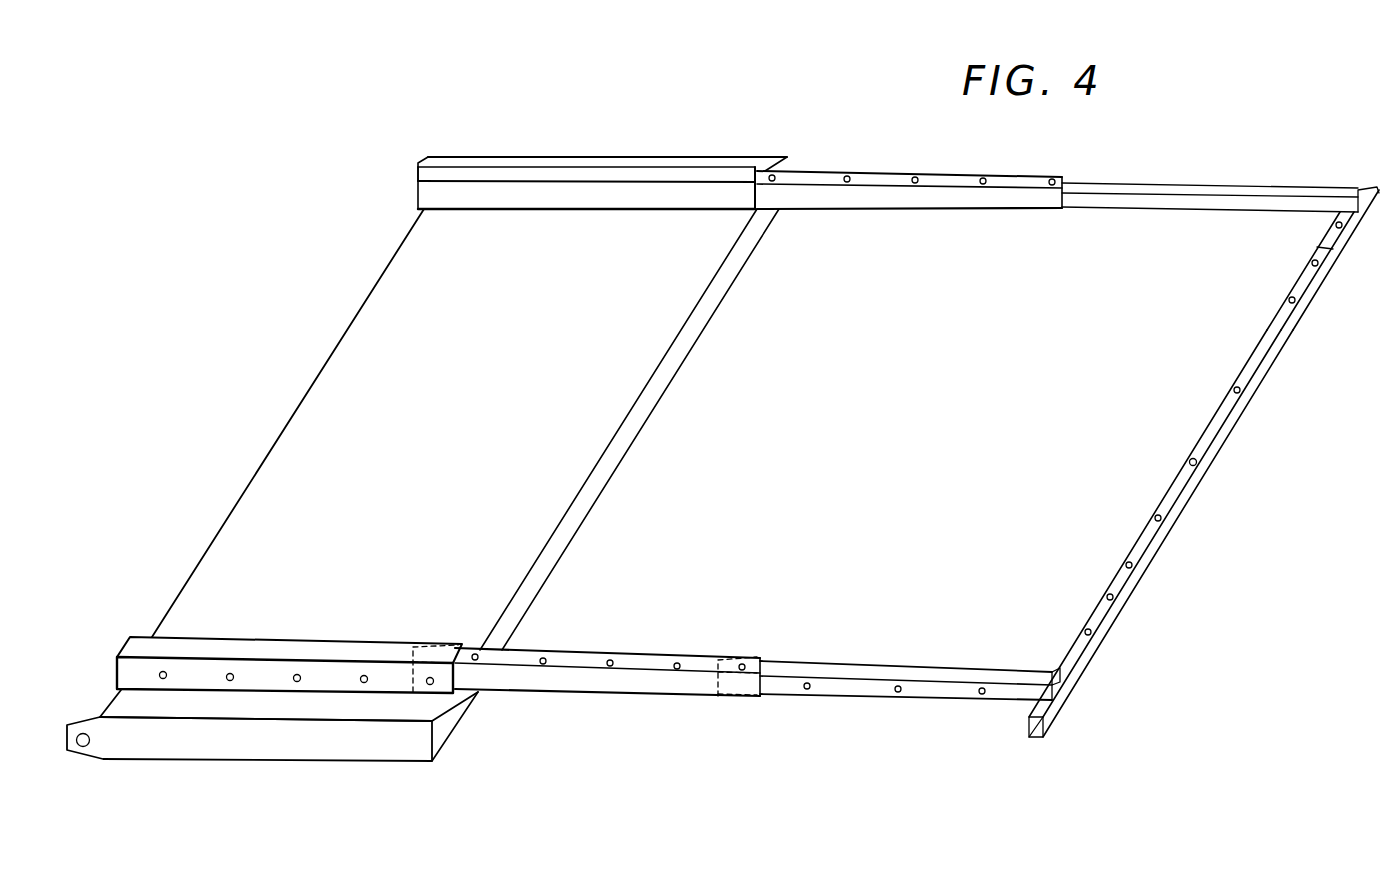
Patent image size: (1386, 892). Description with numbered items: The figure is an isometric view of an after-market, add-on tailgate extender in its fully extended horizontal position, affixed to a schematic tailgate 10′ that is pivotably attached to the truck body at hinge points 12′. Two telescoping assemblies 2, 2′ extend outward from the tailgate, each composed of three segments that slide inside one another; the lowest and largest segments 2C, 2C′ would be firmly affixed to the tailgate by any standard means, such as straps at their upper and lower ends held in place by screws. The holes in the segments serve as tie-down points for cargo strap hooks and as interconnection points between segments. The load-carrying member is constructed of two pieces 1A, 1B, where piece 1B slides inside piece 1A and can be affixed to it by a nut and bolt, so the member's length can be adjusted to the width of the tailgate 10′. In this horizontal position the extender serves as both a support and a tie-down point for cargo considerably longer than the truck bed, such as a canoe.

The telescoping assembly segment 2C′ is at (553, 217).
The telescoping assembly 2′ is at (905, 215).
The load-carrying member piece 1B is at (1326, 252).
The load-carrying member piece 1A is at (1190, 510).
The tailgate 10′ is at (645, 430).
The telescoping assembly segment 2C is at (292, 636).
The telescoping assembly 2 is at (641, 700).
The hinge point 12′ is at (93, 740).